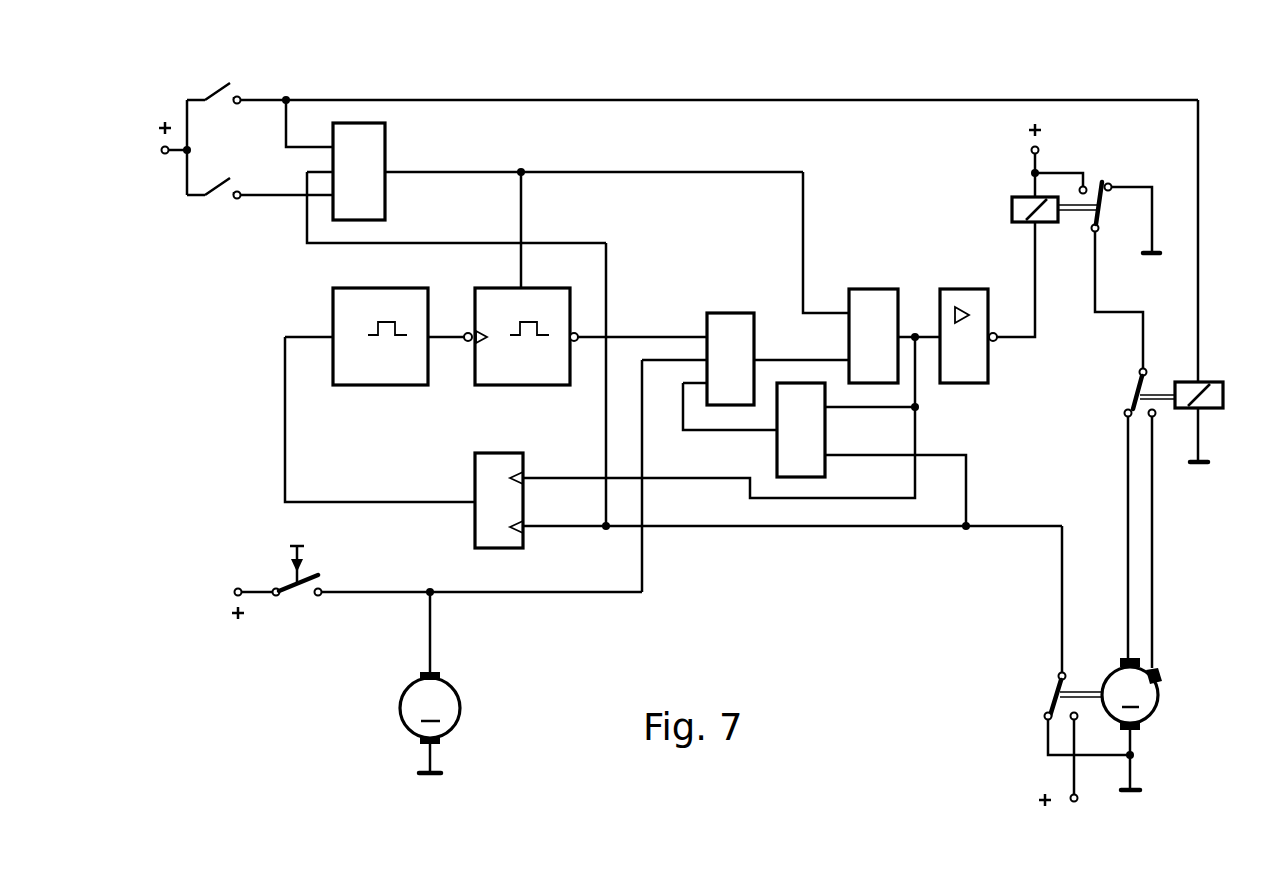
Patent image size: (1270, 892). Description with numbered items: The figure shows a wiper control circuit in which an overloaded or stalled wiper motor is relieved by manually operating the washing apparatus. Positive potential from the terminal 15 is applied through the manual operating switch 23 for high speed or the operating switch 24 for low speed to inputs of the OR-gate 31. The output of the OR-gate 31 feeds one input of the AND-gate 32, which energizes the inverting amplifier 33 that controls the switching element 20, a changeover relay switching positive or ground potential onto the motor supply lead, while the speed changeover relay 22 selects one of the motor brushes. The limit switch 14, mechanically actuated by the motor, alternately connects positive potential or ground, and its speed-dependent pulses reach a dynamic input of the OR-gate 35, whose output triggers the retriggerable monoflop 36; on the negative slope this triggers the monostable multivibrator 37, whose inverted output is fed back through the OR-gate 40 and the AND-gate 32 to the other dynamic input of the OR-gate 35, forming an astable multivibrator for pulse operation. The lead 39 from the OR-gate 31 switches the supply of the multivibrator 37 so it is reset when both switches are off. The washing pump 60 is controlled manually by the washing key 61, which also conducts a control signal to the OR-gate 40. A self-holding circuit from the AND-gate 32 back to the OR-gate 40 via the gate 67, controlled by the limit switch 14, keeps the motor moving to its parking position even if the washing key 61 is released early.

The limit switch 14 is at (1042, 692).
The positive terminal 15 is at (167, 157).
The switching element 20 is at (1050, 215).
The speed changeover relay 22 is at (1223, 392).
The manual operating switch for high speed 23 is at (217, 83).
The operating switch for low speed 24 is at (209, 179).
The OR-gate 31 is at (385, 153).
The AND-gate 32 is at (882, 300).
The inverting amplifier 33 is at (974, 300).
The OR-gate 35 is at (510, 549).
The monoflop 36 is at (396, 297).
The monostable multivibrator 37 is at (556, 298).
The lead 39 is at (522, 217).
The OR-gate 40 is at (745, 348).
The washing pump 60 is at (452, 705).
The washing key 61 is at (322, 557).
The gate 67 is at (808, 442).